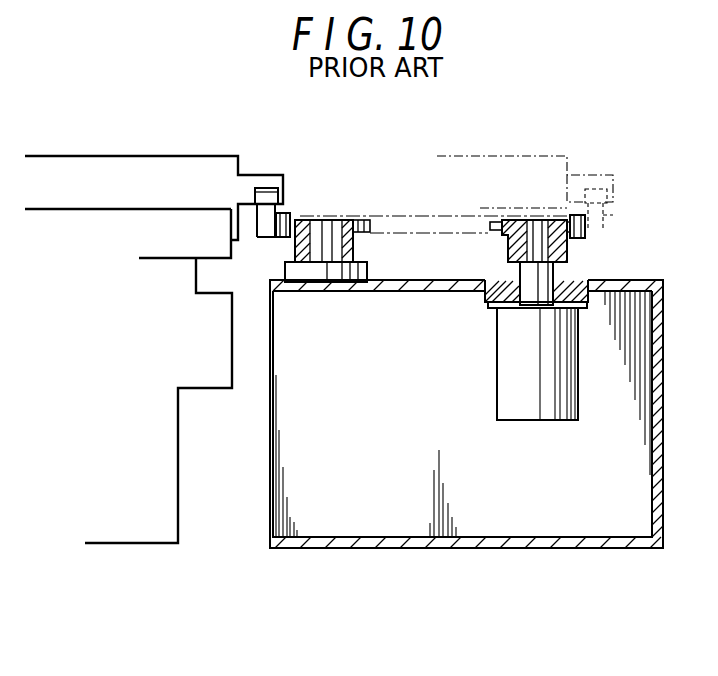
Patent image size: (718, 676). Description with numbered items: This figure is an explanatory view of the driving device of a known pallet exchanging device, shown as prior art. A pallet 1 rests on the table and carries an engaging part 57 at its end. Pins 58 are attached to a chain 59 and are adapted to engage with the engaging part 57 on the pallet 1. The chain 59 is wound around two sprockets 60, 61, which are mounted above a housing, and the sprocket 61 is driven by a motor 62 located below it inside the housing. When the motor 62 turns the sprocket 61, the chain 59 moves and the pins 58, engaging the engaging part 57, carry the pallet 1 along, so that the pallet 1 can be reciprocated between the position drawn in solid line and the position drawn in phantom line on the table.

The pallet 1 is at (151, 168).
The engaging part 57 is at (266, 176).
The pins 58 is at (263, 237).
The chain 59 is at (415, 233).
The sprocket 60 is at (352, 220).
The sprocket 61 is at (567, 248).
The motor 62 is at (541, 420).